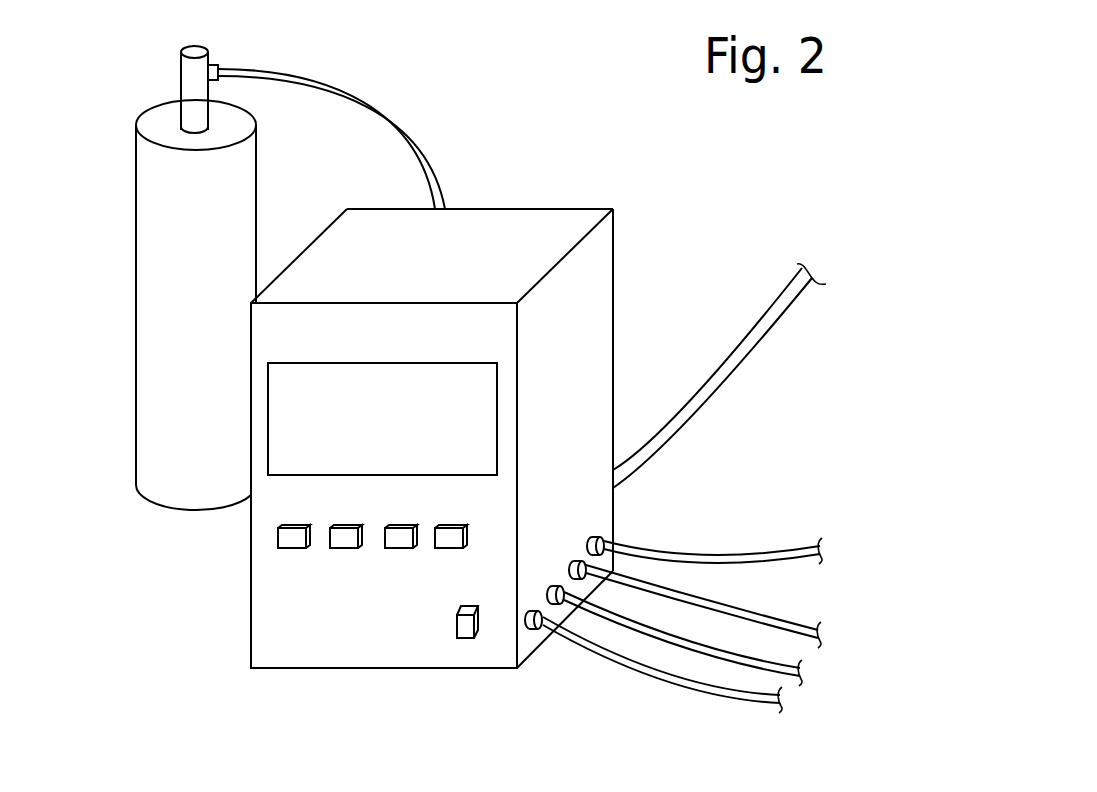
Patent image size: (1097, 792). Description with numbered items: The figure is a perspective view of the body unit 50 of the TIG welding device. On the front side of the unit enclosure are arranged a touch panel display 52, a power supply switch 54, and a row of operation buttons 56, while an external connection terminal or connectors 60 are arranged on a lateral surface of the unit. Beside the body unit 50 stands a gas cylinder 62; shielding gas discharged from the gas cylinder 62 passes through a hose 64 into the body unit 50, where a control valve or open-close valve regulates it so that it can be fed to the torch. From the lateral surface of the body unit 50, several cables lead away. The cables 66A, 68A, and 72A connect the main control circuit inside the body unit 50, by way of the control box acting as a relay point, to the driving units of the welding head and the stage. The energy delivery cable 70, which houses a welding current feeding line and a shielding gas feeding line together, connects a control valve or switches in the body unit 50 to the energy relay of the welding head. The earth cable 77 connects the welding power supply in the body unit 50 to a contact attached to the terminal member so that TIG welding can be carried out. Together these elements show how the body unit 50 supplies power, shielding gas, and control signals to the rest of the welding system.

The body unit 50 is at (549, 182).
The touch panel display 52 is at (347, 363).
The power supply switch 54 is at (455, 615).
The operation buttons 56 is at (348, 552).
The connectors 60 is at (532, 608).
The gas cylinder 62 is at (135, 238).
The hose 64 is at (337, 88).
The cable 66A is at (723, 615).
The cable 68A is at (710, 553).
The energy delivery cable 70 is at (760, 333).
The cable 72A is at (657, 670).
The earth cable 77 is at (733, 652).